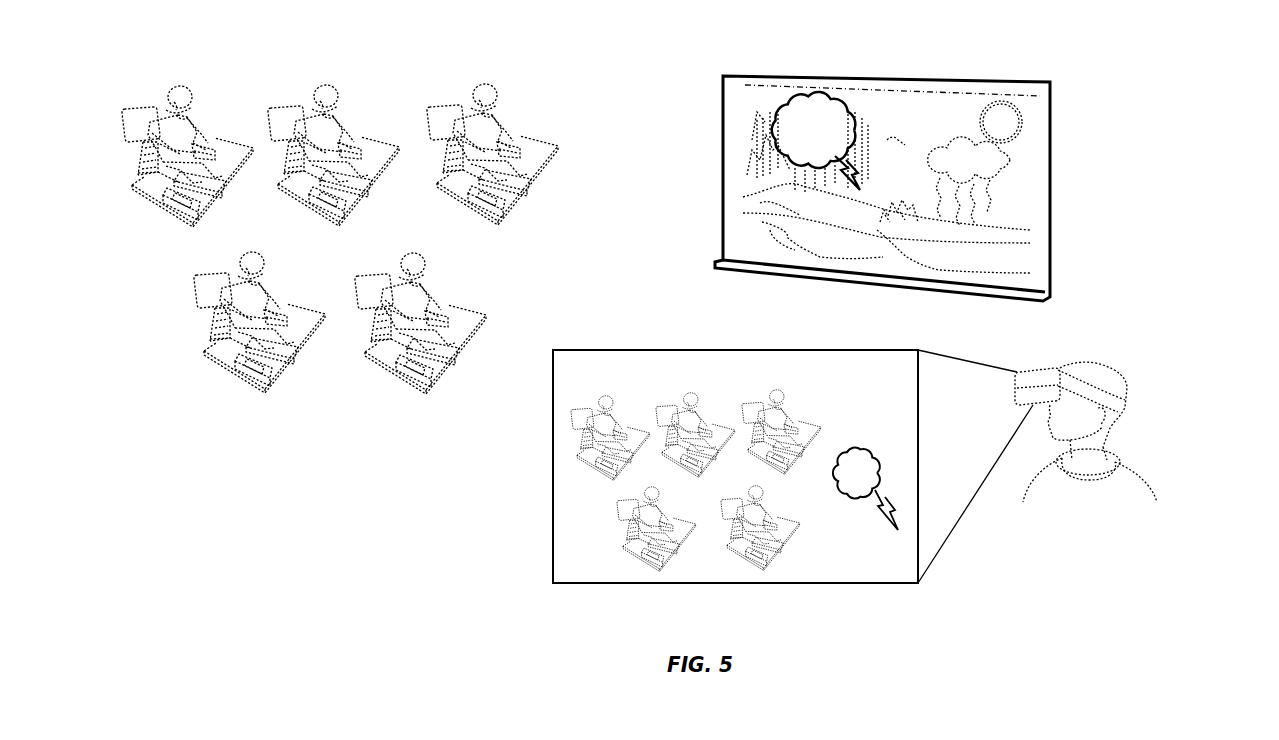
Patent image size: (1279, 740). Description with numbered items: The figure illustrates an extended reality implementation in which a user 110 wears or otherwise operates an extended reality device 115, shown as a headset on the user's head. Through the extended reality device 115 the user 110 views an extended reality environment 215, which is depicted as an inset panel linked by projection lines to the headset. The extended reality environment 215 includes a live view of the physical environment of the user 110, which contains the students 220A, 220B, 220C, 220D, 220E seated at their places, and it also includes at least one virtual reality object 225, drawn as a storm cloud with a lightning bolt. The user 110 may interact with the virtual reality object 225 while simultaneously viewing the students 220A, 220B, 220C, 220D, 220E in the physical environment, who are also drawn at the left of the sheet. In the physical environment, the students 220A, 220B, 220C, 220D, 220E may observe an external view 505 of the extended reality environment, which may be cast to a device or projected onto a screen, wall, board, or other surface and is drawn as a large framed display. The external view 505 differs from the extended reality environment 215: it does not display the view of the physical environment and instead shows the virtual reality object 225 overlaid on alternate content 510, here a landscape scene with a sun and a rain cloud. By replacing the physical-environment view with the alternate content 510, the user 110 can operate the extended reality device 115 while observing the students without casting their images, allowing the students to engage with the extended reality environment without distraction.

The user 110 is at (1133, 478).
The extended reality device 115 is at (1052, 370).
The extended reality environment 215 is at (777, 350).
The student 220A is at (512, 118).
The student 220B is at (357, 117).
The student 220C is at (205, 117).
The student 220D is at (457, 292).
The student 220E is at (275, 288).
The virtual reality object 225 is at (835, 108).
The external view 505 is at (985, 82).
The alternate content 510 is at (1008, 198).